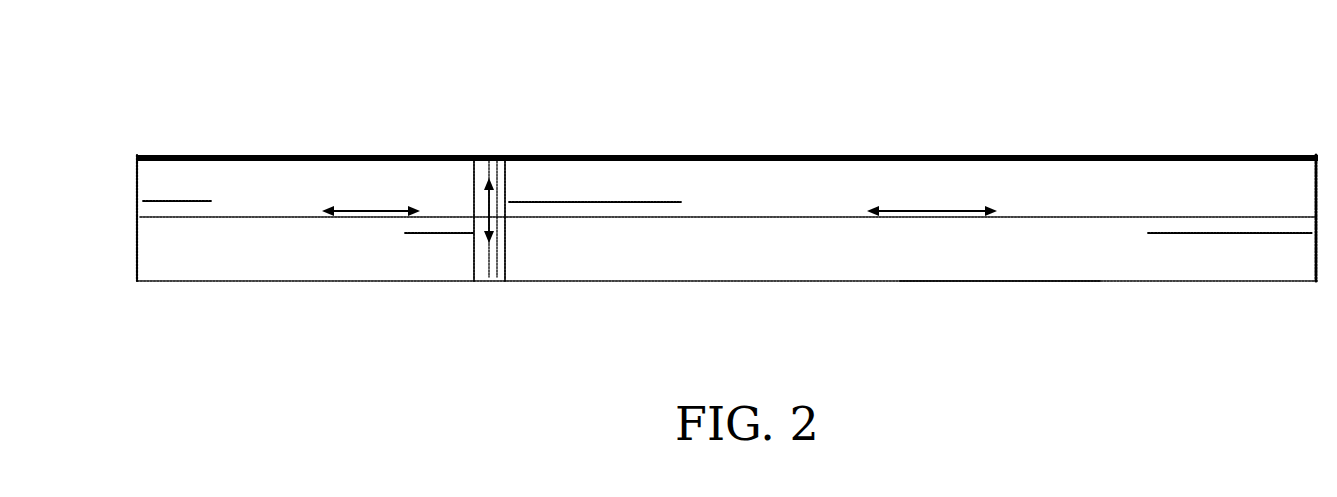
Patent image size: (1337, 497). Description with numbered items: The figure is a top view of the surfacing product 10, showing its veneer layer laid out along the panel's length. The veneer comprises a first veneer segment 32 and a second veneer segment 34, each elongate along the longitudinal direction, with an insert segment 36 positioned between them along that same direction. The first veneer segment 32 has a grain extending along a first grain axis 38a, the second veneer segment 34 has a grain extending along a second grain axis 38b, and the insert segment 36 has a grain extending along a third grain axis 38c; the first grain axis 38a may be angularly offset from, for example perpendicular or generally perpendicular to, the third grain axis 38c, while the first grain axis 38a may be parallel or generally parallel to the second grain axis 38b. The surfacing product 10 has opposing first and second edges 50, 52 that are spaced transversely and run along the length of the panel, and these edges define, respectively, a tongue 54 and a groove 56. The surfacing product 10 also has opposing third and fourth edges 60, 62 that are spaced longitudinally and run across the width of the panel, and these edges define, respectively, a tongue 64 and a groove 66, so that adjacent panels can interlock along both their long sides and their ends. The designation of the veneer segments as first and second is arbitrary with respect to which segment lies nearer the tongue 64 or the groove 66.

The surfacing product 10 is at (214, 92).
The first veneer segment 32 is at (823, 176).
The second veneer segment 34 is at (355, 170).
The insert segment 36 is at (489, 163).
The first grain axis 38a is at (917, 212).
The second grain axis 38b is at (370, 211).
The third grain axis 38c is at (490, 215).
The first edge 50 is at (630, 153).
The second edge 52 is at (797, 281).
The tongue 54 is at (913, 153).
The groove 56 is at (1005, 280).
The third edge 60 is at (1316, 165).
The fourth edge 62 is at (143, 205).
The tongue 64 is at (1312, 240).
The groove 66 is at (138, 232).